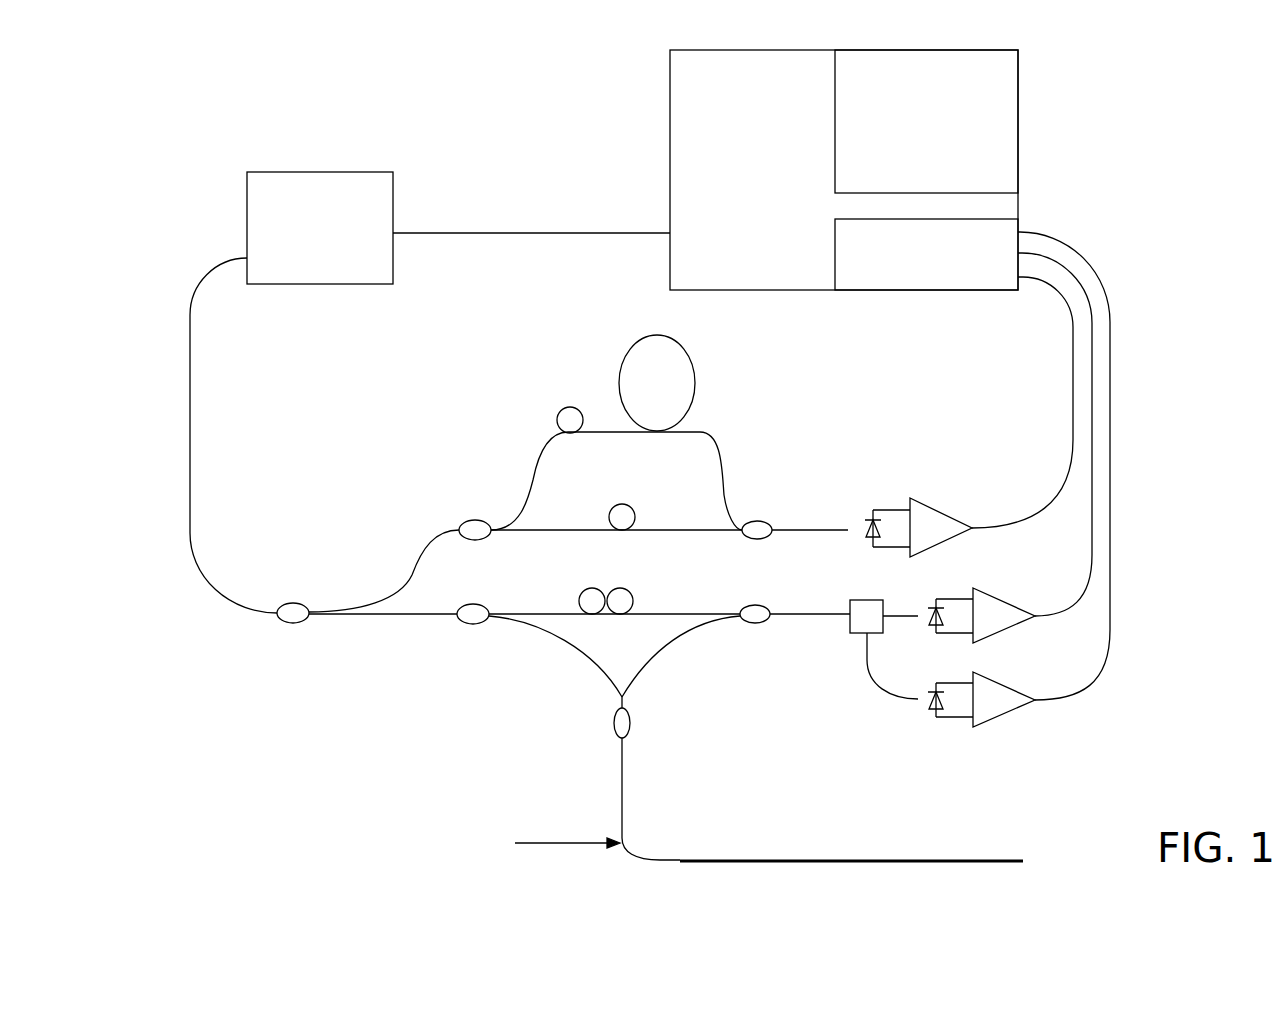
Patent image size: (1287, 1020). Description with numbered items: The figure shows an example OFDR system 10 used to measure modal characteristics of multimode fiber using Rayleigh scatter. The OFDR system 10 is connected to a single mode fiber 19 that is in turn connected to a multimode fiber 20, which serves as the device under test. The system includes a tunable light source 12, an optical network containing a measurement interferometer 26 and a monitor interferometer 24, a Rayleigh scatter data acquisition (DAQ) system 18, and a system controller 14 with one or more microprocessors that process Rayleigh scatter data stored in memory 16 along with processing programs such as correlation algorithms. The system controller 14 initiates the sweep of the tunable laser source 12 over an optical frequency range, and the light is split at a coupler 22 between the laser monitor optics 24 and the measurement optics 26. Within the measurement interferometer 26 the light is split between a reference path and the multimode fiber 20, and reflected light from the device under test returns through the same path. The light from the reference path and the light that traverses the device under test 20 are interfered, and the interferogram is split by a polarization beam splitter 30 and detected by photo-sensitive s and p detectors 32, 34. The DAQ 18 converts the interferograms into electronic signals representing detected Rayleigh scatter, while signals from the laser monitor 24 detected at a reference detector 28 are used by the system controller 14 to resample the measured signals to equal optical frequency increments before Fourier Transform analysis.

The OFDR system 10 is at (163, 125).
The tunable light source 12 is at (313, 172).
The system controller 14 is at (677, 140).
The memory 16 is at (1013, 118).
The Rayleigh scatter data acquisition (DAQ) system 18 is at (835, 255).
The single mode fiber 19 is at (618, 768).
The multimode fiber 20 is at (848, 835).
The fiber coupler 22 is at (300, 603).
The monitor interferometer 24 is at (528, 465).
The measurement interferometer 26 is at (557, 648).
The laser monitor detector 28 is at (916, 468).
The polarization beam splitter (PBS) 30 is at (858, 622).
The s detector 32 is at (1007, 557).
The p detector 34 is at (1012, 757).